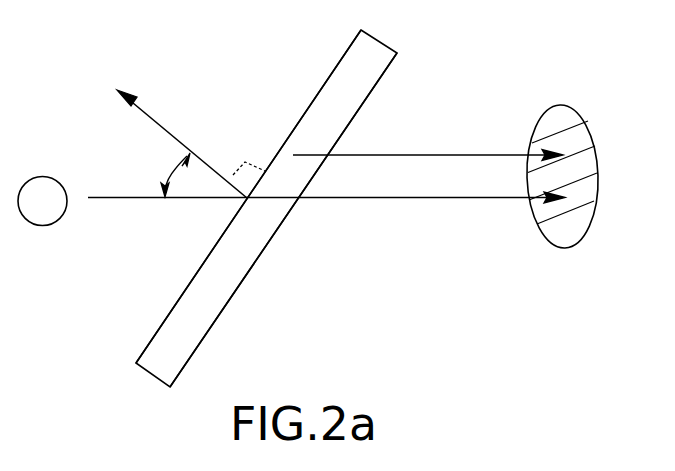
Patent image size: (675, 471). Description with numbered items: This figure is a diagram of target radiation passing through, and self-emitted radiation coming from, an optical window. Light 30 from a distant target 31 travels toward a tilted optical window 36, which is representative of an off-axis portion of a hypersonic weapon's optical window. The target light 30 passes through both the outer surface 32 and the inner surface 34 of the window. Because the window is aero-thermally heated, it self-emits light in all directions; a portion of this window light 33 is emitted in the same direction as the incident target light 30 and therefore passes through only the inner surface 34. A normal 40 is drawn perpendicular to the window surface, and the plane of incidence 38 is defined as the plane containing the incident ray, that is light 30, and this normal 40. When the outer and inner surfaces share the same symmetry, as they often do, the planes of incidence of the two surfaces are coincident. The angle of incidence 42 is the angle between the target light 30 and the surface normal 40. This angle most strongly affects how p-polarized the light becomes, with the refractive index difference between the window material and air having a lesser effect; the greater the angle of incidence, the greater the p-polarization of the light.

The target light 30 is at (458, 198).
The distant target 31 is at (43, 225).
The outer surface 32 is at (191, 282).
The window light 33 is at (440, 155).
The inner surface 34 is at (247, 273).
The tilted optical window 36 is at (172, 334).
The plane of incidence 38 is at (540, 236).
The normal 40 is at (160, 124).
The angle of incidence 42 is at (168, 167).